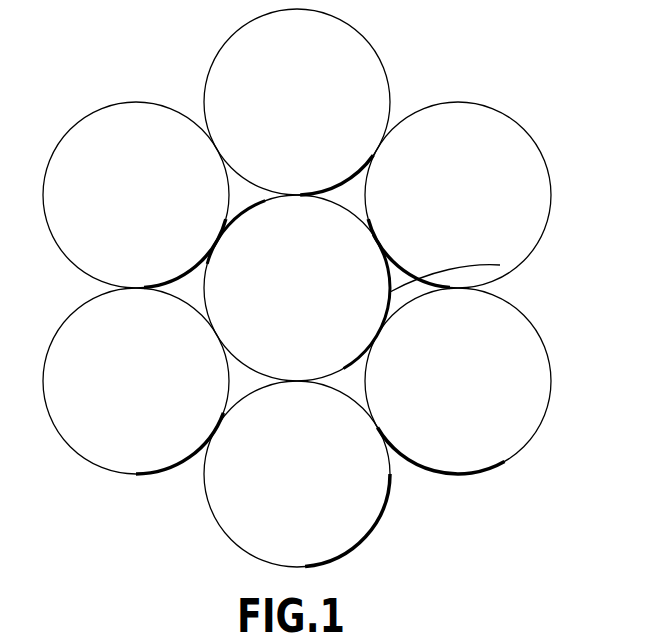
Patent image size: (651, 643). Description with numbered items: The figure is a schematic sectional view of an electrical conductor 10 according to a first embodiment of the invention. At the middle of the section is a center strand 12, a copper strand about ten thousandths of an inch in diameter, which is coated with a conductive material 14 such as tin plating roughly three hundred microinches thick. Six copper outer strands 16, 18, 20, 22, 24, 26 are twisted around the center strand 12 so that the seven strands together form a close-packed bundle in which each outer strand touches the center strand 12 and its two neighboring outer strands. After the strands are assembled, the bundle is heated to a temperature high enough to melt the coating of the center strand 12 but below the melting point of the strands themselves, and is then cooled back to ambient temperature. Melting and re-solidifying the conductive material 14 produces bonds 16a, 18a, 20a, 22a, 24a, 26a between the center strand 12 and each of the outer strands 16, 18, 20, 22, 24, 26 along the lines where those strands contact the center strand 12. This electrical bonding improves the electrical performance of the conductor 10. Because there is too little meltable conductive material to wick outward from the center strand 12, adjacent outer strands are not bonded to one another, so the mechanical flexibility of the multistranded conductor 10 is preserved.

The electrical conductor 10 is at (146, 518).
The center strand 12 is at (313, 300).
The conductive material 14 is at (500, 265).
The outer strand 16 is at (139, 408).
The bond 16a is at (212, 337).
The outer strand 18 is at (137, 207).
The bond 18a is at (217, 242).
The outer strand 20 is at (310, 112).
The bond 20a is at (302, 195).
The outer strand 22 is at (482, 208).
The bond 22a is at (380, 243).
The outer strand 24 is at (478, 398).
The bond 24a is at (378, 337).
The outer strand 26 is at (315, 490).
The bond 26a is at (291, 385).